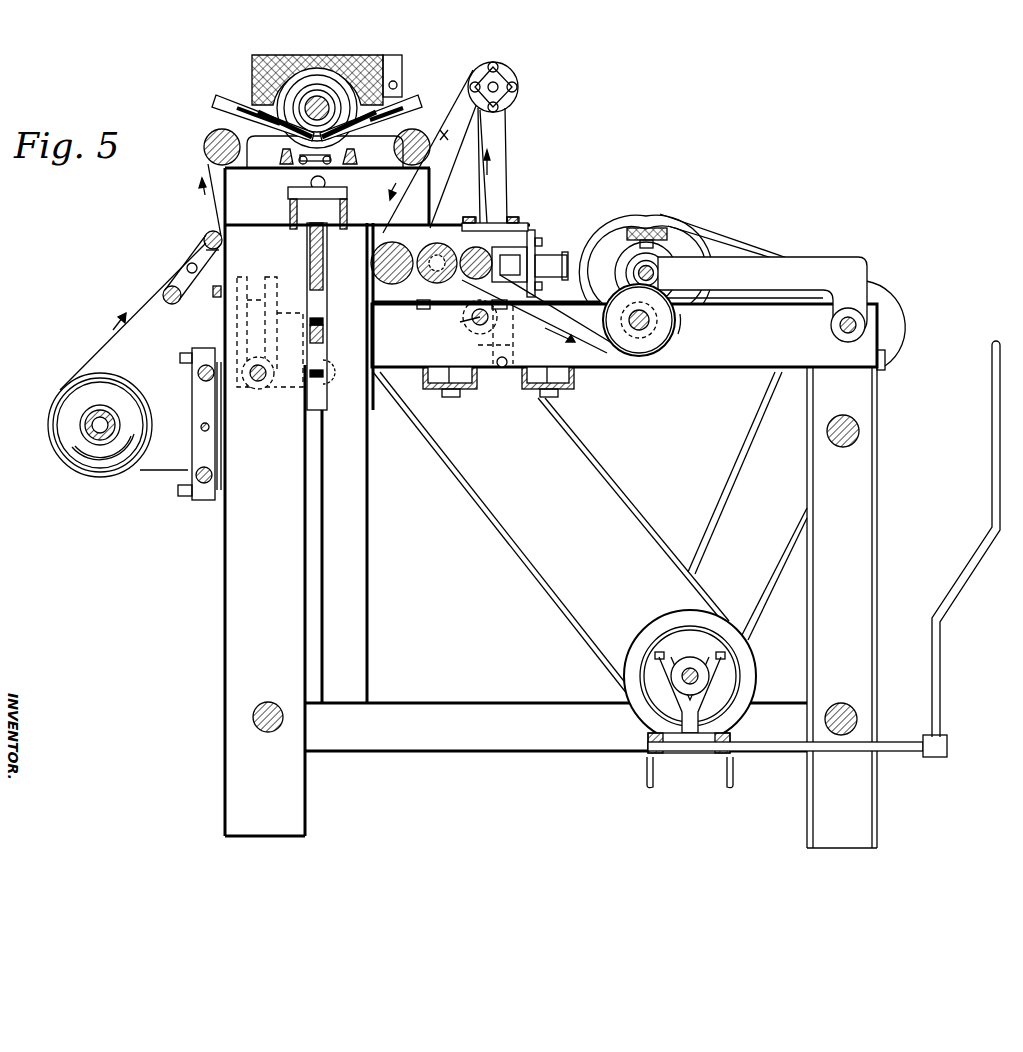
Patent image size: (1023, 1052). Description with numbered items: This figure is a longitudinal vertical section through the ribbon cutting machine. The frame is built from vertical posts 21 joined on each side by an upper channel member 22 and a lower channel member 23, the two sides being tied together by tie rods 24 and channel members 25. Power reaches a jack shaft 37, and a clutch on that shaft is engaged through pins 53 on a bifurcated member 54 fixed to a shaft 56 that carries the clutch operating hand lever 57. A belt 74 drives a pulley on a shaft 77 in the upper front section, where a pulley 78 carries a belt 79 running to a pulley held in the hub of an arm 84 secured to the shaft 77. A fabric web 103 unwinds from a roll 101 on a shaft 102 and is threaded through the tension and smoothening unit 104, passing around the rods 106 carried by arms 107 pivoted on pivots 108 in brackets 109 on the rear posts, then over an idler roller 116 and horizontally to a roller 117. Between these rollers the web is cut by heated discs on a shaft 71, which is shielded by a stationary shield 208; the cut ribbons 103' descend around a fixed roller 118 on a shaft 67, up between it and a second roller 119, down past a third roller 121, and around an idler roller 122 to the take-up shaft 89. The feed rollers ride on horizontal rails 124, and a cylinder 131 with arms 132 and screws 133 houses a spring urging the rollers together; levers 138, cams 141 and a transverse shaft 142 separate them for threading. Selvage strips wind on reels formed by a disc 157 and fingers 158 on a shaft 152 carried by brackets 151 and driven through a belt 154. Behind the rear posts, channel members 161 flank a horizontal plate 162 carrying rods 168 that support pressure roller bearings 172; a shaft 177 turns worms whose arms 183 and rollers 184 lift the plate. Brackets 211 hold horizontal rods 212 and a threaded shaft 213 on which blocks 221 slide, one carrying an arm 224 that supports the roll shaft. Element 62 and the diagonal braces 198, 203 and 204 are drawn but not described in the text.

The vertical posts 21 is at (232, 582).
The upper channel member 22 is at (733, 370).
The lower channel member 23 is at (549, 756).
The tie rods 24 is at (252, 718).
The channel members 25 is at (543, 399).
The jack shaft 37 is at (692, 668).
The pins 53 is at (710, 652).
The bifurcated member 54 is at (702, 722).
The shaft 56 is at (889, 744).
The clutch operating hand lever 57 is at (992, 406).
The diagonal brace 62 is at (526, 563).
The shaft 67 is at (378, 270).
The shaft 71 is at (318, 96).
The belt 74 is at (731, 474).
The shaft 77 is at (856, 316).
The pulley 78 is at (892, 321).
The belt 79 is at (736, 233).
The arm 84 is at (777, 264).
The take-up shaft 89 is at (652, 270).
The roll 101 is at (60, 466).
The shaft 102 is at (93, 421).
The fabric web 103 is at (301, 253).
The severed fabric or ribbons 103' is at (525, 228).
The tension and smoothening unit 104 is at (178, 277).
The rods 106 is at (208, 232).
The arms 107 is at (204, 247).
The pivots 108 is at (188, 266).
The brackets 109 is at (212, 285).
The idler roller 116 is at (216, 131).
The roller 117 is at (422, 120).
The roller 118 is at (420, 282).
The second roller 119 is at (440, 298).
The third roller 121 is at (490, 232).
The idler roller 122 is at (676, 336).
The horizontal rails 124 is at (405, 233).
The cylinder 131 is at (549, 257).
The arms 132 is at (538, 246).
The screws 133 is at (541, 236).
The levers 138 is at (514, 345).
The cams 141 is at (470, 321).
The transverse shaft 142 is at (463, 327).
The brackets 151 is at (497, 151).
The shaft 152 is at (500, 87).
The belt 154 is at (456, 144).
The disc 157 is at (509, 76).
The fingers 158 is at (498, 105).
The channel members 161 is at (357, 633).
The horizontal plate 162 is at (309, 256).
The rods 168 is at (290, 195).
The roller bearings 172 is at (326, 178).
The shaft 177 is at (258, 382).
The arms 183 is at (326, 384).
The rollers 184 is at (323, 338).
The belt 198 is at (466, 82).
The brackets 203 is at (282, 167).
The bracket 204 is at (310, 172).
The stationary shield 208 is at (268, 72).
The brackets 211 is at (200, 502).
The horizontal rods 212 is at (199, 373).
The shaft 213 is at (210, 427).
The blocks 221 is at (200, 456).
The arm 224 is at (145, 458).